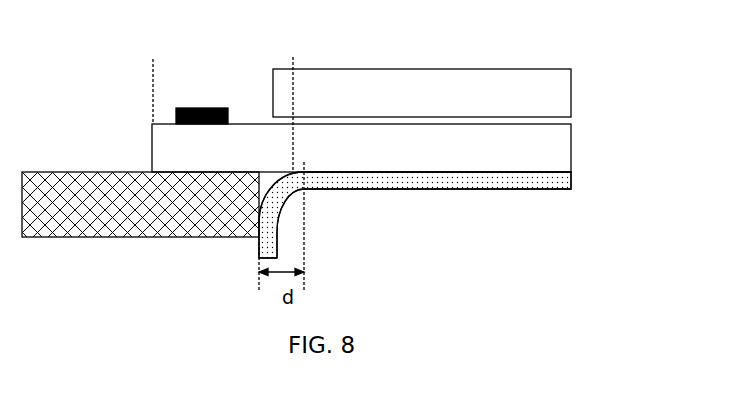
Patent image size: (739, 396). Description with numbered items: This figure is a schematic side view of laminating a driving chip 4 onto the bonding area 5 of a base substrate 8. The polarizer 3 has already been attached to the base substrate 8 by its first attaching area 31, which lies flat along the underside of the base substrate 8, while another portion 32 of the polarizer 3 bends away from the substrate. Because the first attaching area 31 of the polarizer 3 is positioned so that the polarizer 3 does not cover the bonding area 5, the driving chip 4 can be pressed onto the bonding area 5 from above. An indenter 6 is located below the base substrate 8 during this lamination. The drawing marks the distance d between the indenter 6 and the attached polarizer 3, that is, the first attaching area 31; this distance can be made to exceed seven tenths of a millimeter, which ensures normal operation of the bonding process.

The polarizer 3 is at (412, 236).
The first attaching area 31 is at (412, 180).
The protective film bent portion 32 is at (283, 205).
The driving chip 4 is at (175, 112).
The bonding area 5 is at (213, 72).
The indenter 6 is at (82, 185).
The base substrate 8 is at (547, 140).